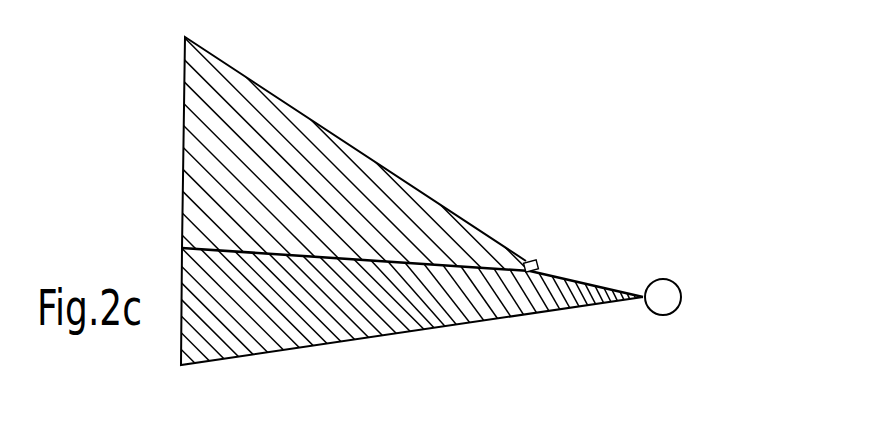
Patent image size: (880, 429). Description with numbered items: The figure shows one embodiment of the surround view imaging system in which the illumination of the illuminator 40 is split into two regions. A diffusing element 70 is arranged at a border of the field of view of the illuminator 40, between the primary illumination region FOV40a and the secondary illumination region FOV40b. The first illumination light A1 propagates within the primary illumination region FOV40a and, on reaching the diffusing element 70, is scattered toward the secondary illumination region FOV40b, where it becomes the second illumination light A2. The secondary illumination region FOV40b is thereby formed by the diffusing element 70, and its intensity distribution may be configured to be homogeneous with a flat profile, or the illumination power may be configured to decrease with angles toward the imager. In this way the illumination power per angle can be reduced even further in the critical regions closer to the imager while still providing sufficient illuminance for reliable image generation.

The illuminator 40 is at (667, 302).
The diffusing element 70 is at (546, 254).
The primary illumination region FOV40a is at (485, 333).
The secondary illumination region FOV40b is at (355, 214).
The first illumination light A1 is at (525, 386).
The second illumination light A2 is at (478, 67).